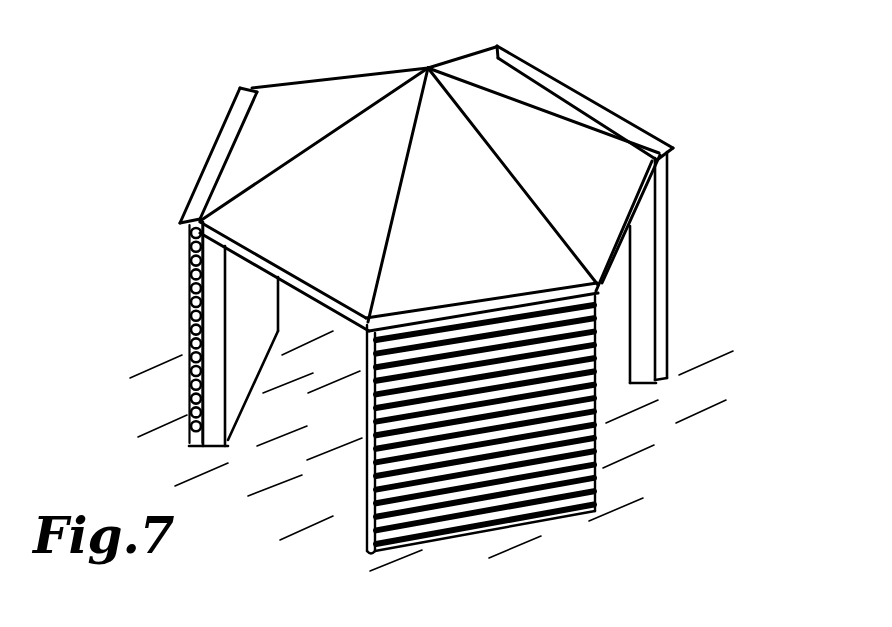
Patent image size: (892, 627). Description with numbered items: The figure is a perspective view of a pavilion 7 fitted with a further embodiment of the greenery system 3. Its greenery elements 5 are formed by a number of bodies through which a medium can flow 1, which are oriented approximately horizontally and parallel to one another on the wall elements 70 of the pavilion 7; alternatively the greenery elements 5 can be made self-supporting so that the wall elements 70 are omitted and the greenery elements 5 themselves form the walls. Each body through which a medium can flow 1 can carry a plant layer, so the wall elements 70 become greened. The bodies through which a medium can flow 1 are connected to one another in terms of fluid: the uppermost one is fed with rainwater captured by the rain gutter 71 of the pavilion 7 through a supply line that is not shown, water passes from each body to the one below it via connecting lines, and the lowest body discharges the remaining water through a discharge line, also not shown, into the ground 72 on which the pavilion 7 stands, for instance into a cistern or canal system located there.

The body through which a medium can flow 1 is at (592, 510).
The greenery system 3 is at (372, 184).
The greenery element 5 is at (391, 389).
The pavilion 7 is at (193, 124).
The wall element 70 is at (189, 441).
The rain gutter 71 is at (204, 180).
The ground 72 is at (152, 420).